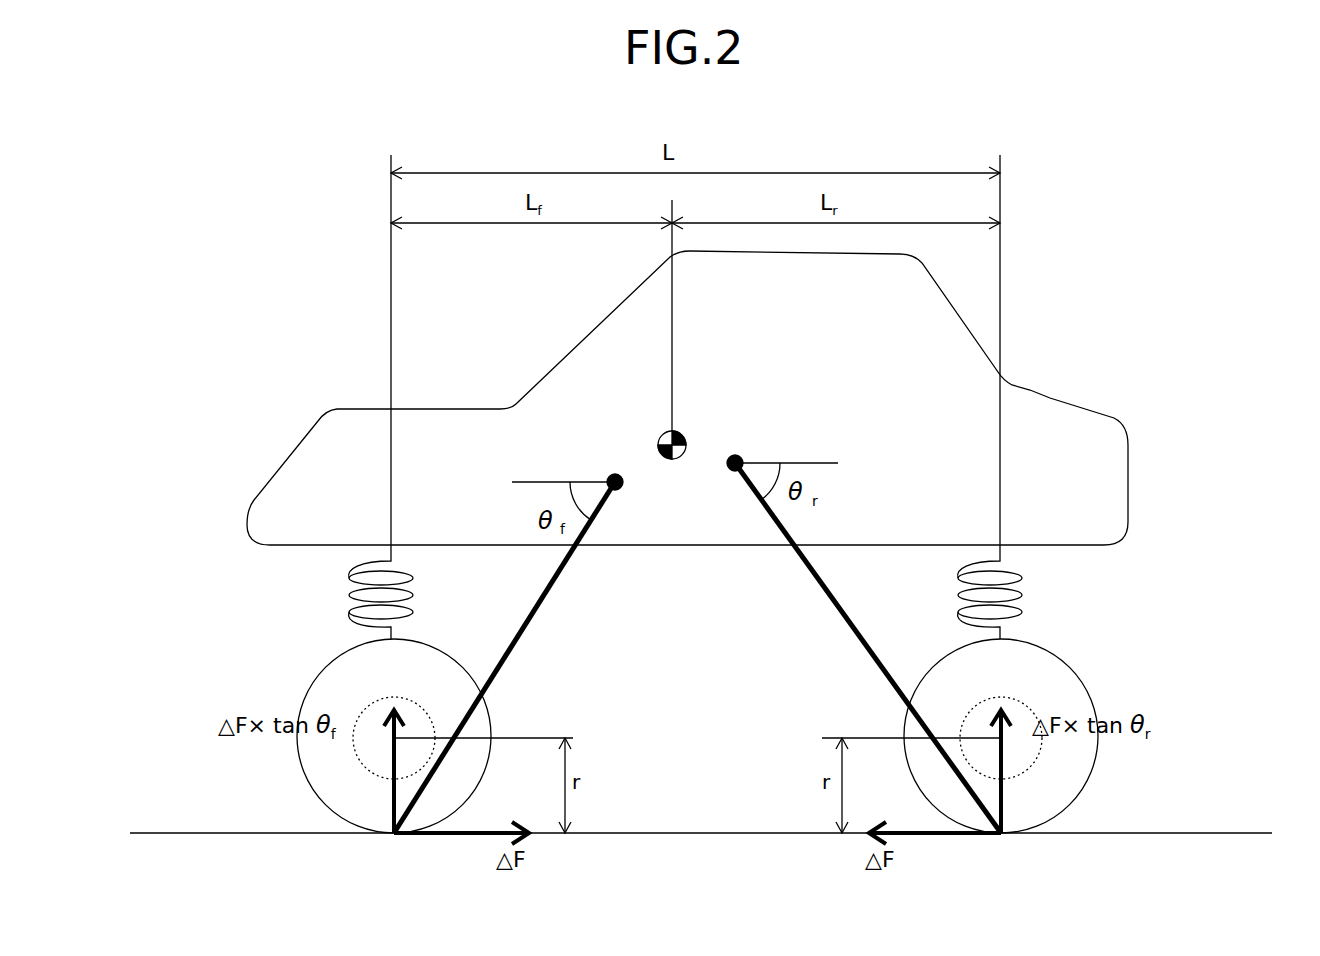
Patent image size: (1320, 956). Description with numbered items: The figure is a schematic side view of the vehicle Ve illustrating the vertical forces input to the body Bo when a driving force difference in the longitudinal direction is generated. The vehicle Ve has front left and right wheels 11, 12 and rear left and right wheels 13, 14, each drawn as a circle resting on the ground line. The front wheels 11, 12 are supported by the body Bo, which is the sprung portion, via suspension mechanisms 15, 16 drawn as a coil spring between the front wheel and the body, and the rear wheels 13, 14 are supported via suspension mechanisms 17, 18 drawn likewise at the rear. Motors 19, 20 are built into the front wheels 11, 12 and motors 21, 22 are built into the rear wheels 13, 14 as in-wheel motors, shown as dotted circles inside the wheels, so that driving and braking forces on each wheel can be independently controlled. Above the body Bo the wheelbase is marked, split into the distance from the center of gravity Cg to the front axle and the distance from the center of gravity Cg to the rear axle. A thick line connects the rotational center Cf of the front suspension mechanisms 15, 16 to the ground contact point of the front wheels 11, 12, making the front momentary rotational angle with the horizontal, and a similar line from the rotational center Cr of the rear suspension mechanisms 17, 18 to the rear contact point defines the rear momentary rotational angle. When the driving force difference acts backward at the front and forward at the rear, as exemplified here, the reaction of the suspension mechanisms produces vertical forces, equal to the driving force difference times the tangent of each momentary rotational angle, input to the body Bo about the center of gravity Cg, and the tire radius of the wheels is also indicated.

The front left wheel 11 is at (369, 736).
The front right wheel 12 is at (331, 667).
The rear left wheel 13 is at (1015, 730).
The rear right wheel 14 is at (1048, 660).
The suspension mechanism 15 is at (332, 592).
The suspension mechanism 16 is at (348, 578).
The suspension mechanism 17 is at (1034, 592).
The suspension mechanism 18 is at (1022, 581).
The motor 19 is at (420, 696).
The motor 20 is at (427, 703).
The motor 21 is at (961, 696).
The motor 22 is at (966, 710).
The vehicle Ve is at (326, 316).
The body Bo is at (1050, 401).
The center of gravity Cg is at (664, 437).
The rotational center Cf is at (624, 484).
The rotational center Cr is at (742, 455).